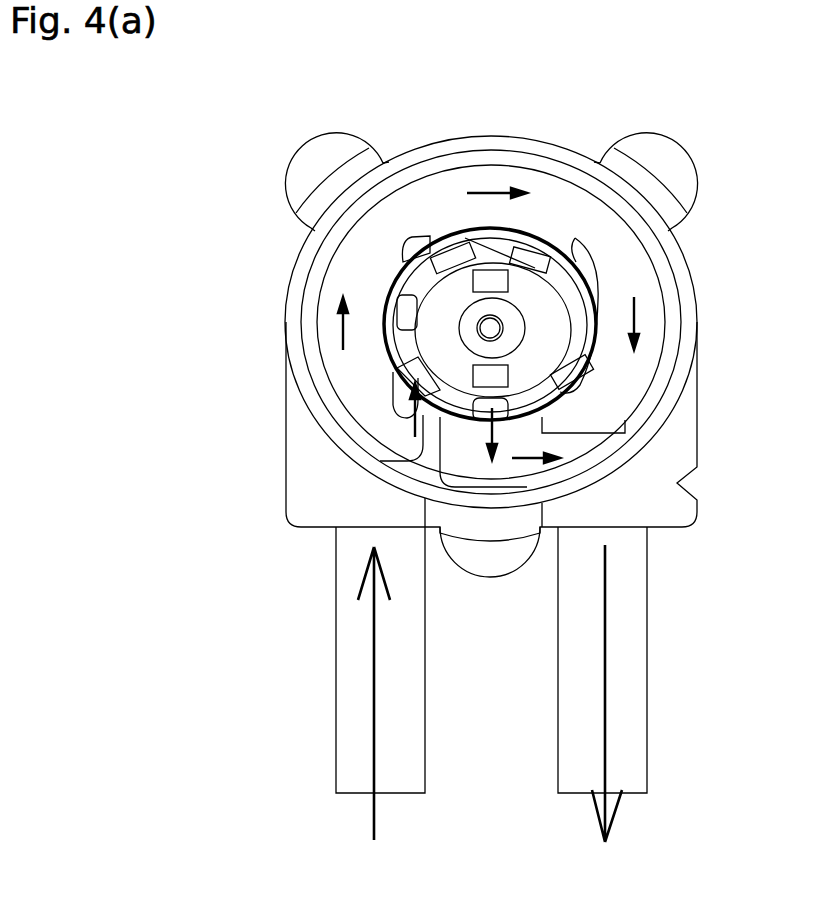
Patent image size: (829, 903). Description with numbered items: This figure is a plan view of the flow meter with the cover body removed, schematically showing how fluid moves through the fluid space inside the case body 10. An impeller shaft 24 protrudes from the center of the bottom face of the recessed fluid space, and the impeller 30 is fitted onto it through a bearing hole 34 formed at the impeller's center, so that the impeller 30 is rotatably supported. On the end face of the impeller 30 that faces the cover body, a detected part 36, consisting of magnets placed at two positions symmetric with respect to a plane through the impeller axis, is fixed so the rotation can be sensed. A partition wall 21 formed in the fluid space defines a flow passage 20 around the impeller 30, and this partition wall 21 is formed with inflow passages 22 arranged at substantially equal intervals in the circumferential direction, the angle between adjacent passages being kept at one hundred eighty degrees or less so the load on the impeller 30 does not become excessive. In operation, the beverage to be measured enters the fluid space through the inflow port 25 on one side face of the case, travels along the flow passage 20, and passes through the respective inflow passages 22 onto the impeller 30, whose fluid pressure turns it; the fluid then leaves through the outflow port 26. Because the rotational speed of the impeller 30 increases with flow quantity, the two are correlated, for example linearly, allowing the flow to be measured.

The case body 10 is at (700, 228).
The flow passage 20 is at (462, 187).
The partition wall 21 is at (446, 232).
The inflow passages 22 is at (566, 270).
The impeller shaft 24 is at (472, 326).
The inflow port 25 is at (405, 812).
The outflow port 26 is at (633, 813).
The impeller 30 is at (556, 317).
The bearing hole 34 is at (478, 329).
The detected part 36 is at (472, 282).